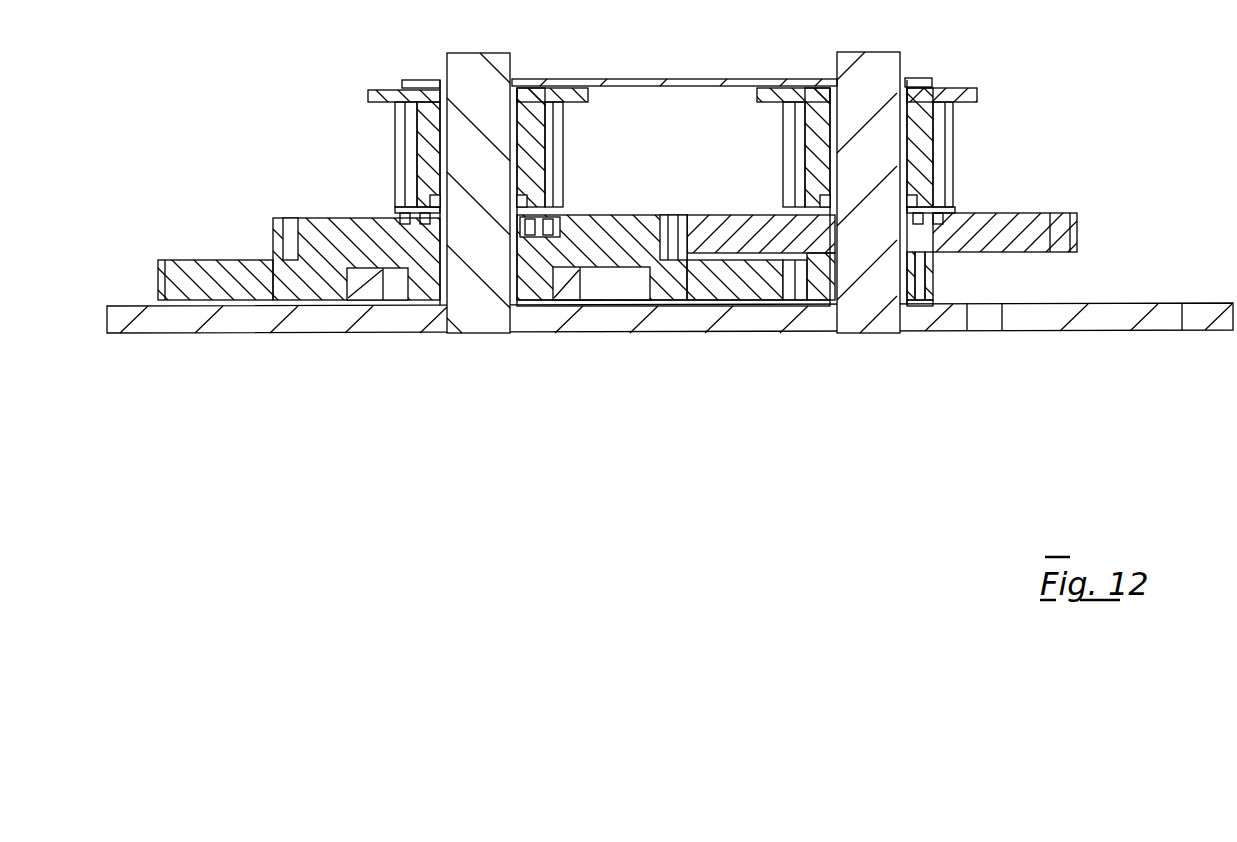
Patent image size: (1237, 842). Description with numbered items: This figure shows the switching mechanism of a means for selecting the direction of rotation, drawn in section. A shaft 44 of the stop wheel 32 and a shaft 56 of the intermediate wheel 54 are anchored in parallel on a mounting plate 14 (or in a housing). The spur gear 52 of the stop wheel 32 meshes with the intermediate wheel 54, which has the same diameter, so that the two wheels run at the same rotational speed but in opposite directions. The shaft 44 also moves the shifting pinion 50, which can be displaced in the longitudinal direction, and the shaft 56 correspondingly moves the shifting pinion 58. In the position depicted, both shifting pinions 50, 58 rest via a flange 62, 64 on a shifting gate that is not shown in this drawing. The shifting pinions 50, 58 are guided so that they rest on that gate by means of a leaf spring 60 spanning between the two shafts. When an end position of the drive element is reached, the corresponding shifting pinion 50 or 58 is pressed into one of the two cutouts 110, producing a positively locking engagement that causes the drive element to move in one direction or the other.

The mounting plate 14 is at (1153, 317).
The stop wheel 32 is at (276, 290).
The shaft 44 is at (483, 322).
The shifting pinion 50 is at (427, 154).
The spur gear 52 is at (340, 245).
The intermediate wheel 54 is at (1037, 240).
The shaft 56 is at (866, 322).
The shifting pinion 58 is at (918, 155).
The leaf spring 60 is at (670, 78).
The flange 62 is at (372, 96).
The flange 64 is at (975, 93).
The cutouts 110 is at (398, 217).